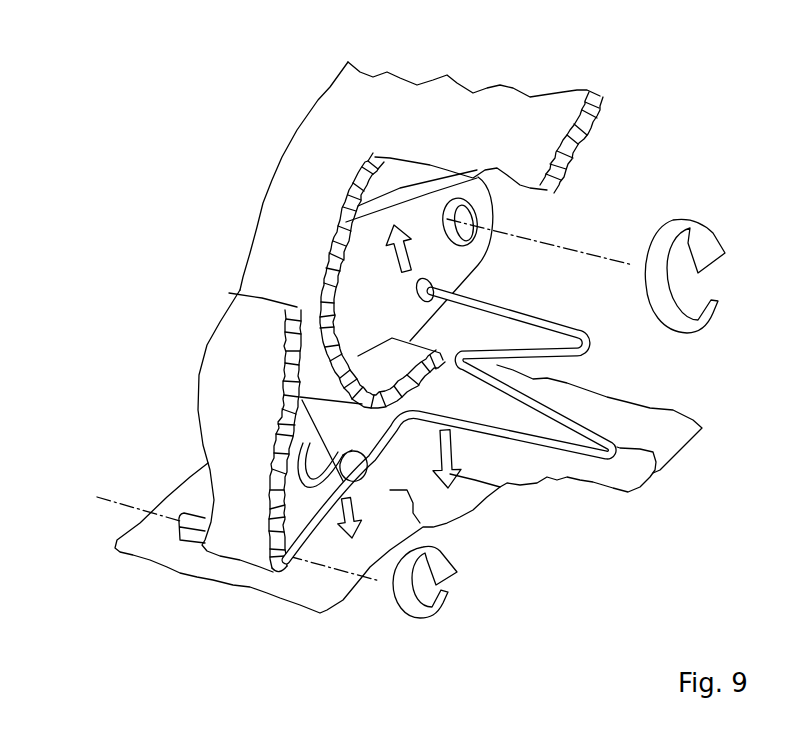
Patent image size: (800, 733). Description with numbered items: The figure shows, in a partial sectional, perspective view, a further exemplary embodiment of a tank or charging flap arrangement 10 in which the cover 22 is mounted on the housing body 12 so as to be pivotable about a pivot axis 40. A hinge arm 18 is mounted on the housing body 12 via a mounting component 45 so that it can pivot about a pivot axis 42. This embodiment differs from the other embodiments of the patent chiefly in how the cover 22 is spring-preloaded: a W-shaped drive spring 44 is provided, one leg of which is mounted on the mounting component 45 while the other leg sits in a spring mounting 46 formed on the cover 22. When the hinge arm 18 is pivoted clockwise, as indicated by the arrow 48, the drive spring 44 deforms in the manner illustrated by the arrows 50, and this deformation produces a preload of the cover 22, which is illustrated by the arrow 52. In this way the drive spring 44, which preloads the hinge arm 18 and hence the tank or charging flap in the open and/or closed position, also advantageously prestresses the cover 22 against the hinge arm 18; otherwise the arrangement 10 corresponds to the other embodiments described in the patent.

The tank or charging flap arrangement 10 is at (175, 182).
The housing body 12 is at (618, 473).
The hinge arm 18 is at (312, 147).
The cover 22 is at (223, 361).
The pivot axis 40 is at (97, 502).
The pivot axis 42 is at (550, 243).
The W-shaped drive spring 44 is at (660, 471).
The mounting component 45 is at (425, 208).
The spring mounting 46 is at (423, 527).
The arrow 48 is at (673, 227).
The arrows 50 is at (387, 4).
The arrow 52 is at (428, 618).